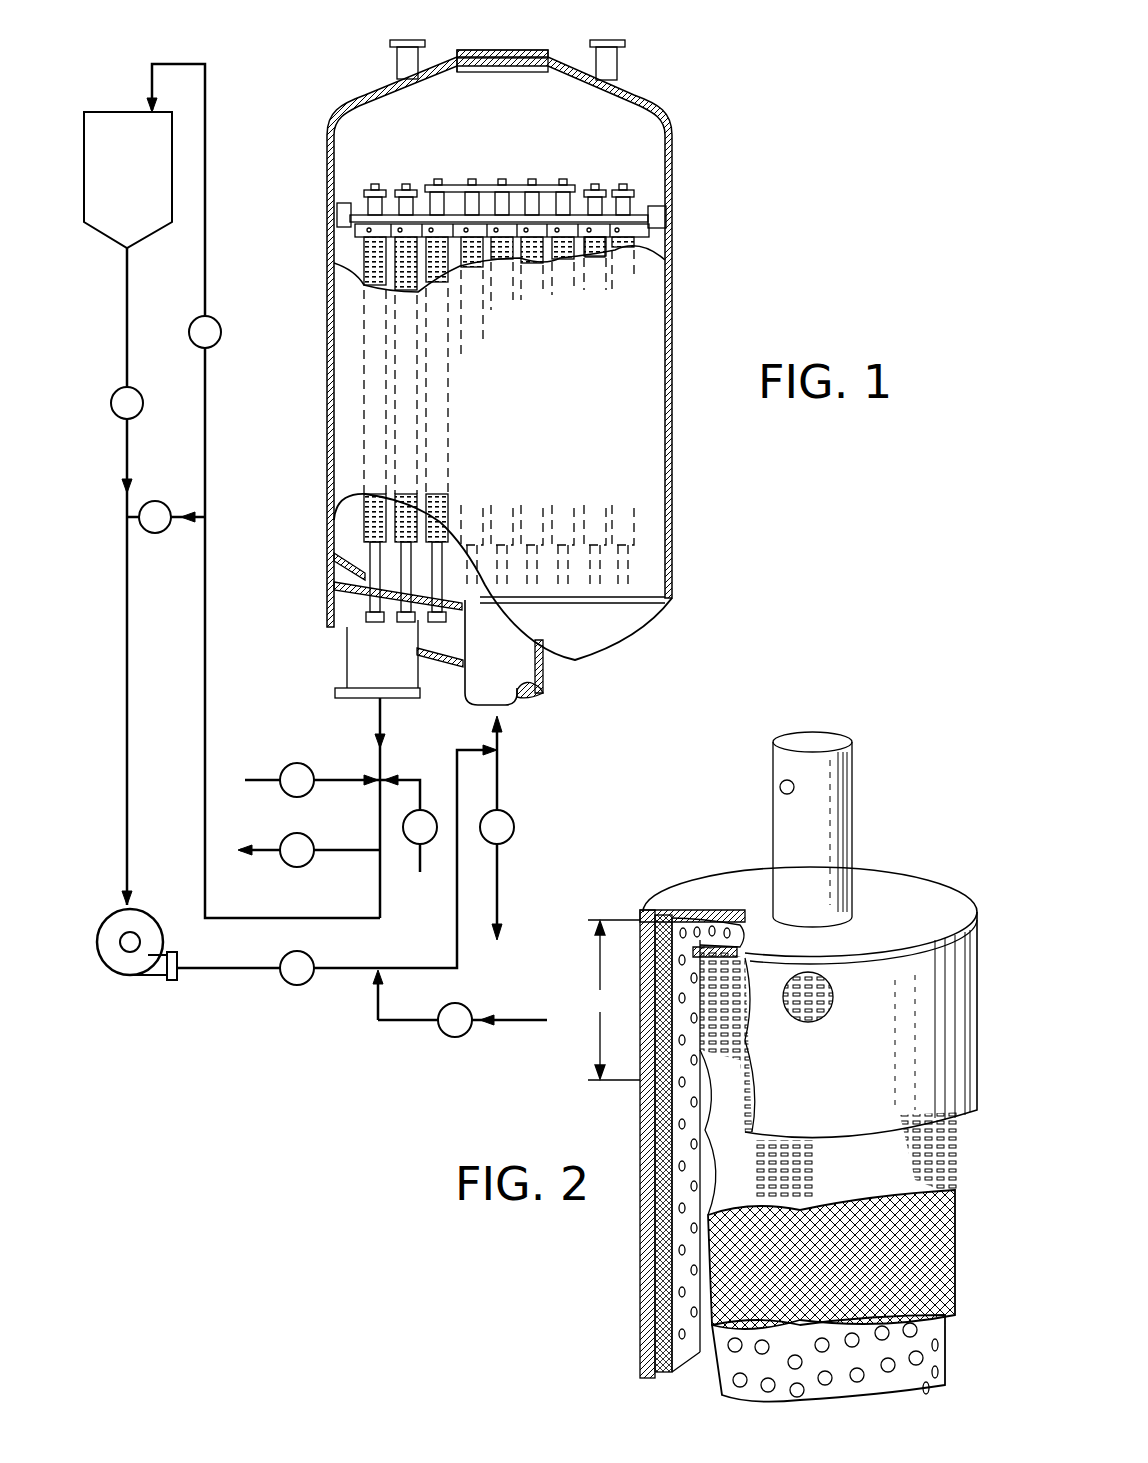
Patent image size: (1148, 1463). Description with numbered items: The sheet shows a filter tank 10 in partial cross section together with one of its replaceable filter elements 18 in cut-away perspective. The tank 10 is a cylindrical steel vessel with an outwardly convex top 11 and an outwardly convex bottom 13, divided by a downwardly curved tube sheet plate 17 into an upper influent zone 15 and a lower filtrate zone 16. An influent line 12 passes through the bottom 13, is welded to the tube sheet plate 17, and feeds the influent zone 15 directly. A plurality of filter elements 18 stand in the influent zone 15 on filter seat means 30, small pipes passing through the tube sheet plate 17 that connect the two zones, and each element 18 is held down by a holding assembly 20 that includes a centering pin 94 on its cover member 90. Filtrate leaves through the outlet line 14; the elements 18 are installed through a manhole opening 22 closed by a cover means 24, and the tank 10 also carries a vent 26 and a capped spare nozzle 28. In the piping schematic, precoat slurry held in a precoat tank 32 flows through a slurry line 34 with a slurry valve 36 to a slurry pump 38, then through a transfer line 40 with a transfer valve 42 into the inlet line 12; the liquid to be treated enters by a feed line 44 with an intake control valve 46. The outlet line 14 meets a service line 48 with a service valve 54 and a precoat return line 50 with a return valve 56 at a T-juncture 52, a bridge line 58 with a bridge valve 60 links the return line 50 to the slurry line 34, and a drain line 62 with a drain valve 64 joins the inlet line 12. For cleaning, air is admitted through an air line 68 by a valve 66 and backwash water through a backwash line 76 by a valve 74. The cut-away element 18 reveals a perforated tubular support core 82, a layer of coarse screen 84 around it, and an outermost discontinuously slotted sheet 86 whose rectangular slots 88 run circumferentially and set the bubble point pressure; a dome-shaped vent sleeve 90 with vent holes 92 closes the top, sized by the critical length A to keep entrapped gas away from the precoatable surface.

In FIG. 1, the filter tank 10 is at (658, 78).
In FIG. 1, the outwardly convex top 11 is at (368, 94).
In FIG. 1, the influent line 12 is at (528, 715).
In FIG. 1, the outwardly convex bottom 13 is at (600, 652).
In FIG. 1, the outlet line 14 is at (366, 676).
In FIG. 1, the influent zone 15 is at (488, 120).
In FIG. 1, the filtrate zone 16 is at (447, 633).
In FIG. 1, the tube sheet plate 17 is at (363, 548).
In FIG. 1, the filter elements 18 is at (360, 270).
In FIG. 1, the holding assembly 20 is at (406, 183).
In FIG. 1, the manhole opening 22 is at (457, 62).
In FIG. 1, the cover means 24 is at (500, 50).
In FIG. 1, the vent 26 is at (395, 50).
In FIG. 1, the spare nozzle 28 is at (619, 62).
In FIG. 1, the filter seat means 30 is at (352, 588).
In FIG. 1, the precoat tank 32 is at (148, 240).
In FIG. 1, the slurry line 34 is at (125, 742).
In FIG. 1, the slurry valve 36 is at (113, 401).
In FIG. 1, the slurry pump 38 is at (150, 980).
In FIG. 1, the transfer line 40 is at (462, 945).
In FIG. 1, the transfer valve 42 is at (290, 985).
In FIG. 1, the feed line 44 is at (375, 978).
In FIG. 1, the intake control valve 46 is at (470, 1010).
In FIG. 1, the service line 48 is at (266, 850).
In FIG. 1, the precoat return line 50 is at (208, 150).
In FIG. 1, the T-juncture 52 is at (355, 860).
In FIG. 1, the service valve 54 is at (293, 862).
In FIG. 1, the return valve 56 is at (213, 342).
In FIG. 1, the bridge line 58 is at (160, 503).
In FIG. 1, the bridge valve 60 is at (155, 533).
In FIG. 1, the drain line 62 is at (504, 900).
In FIG. 1, the drain valve 64 is at (514, 827).
In FIG. 1, the air valve 66 is at (428, 812).
In FIG. 1, the air line 68 is at (420, 865).
In FIG. 1, the backwash valve 74 is at (300, 790).
In FIG. 1, the backwash line 76 is at (262, 780).
In FIG. 2, the tubular support core 82 is at (945, 1345).
In FIG. 2, the coarse screen 84 is at (955, 1240).
In FIG. 2, the discontinuously slotted sheet 86 is at (958, 1140).
In FIG. 2, the slots 88 is at (800, 1178).
In FIG. 1, the vent sleeve 90 is at (655, 232).
In FIG. 2, the vent sleeve 90 is at (975, 945).
In FIG. 2, the vent hole 92 is at (825, 978).
In FIG. 1, the centering pin 94 is at (590, 190).
In FIG. 2, the centering pin 94 is at (850, 792).